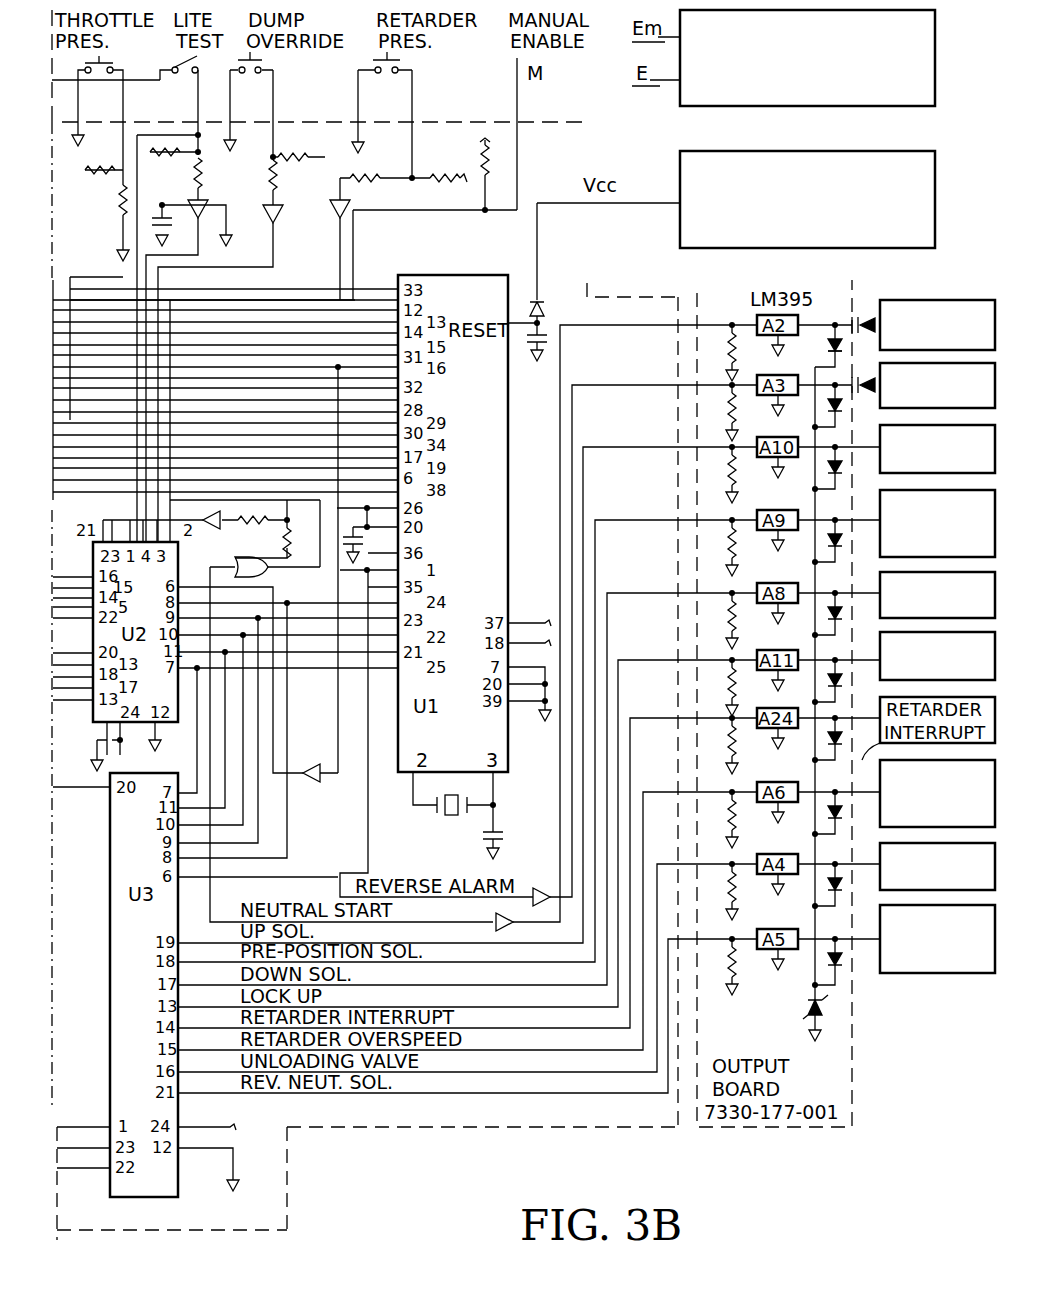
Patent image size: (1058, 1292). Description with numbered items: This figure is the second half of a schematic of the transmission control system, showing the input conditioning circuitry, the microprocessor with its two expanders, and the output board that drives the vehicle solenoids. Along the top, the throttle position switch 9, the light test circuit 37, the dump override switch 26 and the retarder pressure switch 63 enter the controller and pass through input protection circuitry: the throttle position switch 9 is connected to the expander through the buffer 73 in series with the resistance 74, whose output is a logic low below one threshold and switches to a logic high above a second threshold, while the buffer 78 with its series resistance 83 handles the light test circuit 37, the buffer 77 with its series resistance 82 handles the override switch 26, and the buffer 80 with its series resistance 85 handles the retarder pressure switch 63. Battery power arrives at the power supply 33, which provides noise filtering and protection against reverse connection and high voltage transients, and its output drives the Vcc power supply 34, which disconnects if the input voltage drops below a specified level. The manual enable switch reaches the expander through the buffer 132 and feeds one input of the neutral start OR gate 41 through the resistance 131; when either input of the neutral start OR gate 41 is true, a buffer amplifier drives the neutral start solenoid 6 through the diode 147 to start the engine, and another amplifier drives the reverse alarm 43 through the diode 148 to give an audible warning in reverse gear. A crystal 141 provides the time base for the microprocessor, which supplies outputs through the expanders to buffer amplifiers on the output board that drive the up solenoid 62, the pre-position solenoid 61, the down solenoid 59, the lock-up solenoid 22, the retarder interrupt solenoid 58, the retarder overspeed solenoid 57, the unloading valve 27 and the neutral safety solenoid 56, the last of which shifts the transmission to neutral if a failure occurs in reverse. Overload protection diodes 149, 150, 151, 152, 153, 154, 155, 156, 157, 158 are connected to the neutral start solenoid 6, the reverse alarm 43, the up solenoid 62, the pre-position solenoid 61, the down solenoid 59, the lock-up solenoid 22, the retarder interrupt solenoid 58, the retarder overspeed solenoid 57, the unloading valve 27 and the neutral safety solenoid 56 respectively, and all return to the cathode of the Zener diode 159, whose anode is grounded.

The throttle position switch 9 is at (113, 67).
The light test circuit 37 is at (186, 82).
The dump override switch 26 is at (268, 72).
The retarder pressure switch 63 is at (415, 73).
The resistance 74 is at (121, 207).
The buffer 73 is at (117, 258).
The series resistance 83 is at (188, 178).
The buffer 78 is at (204, 206).
The series resistance 82 is at (282, 182).
The buffer 77 is at (284, 223).
The buffer 80 is at (332, 227).
The series resistance 85 is at (362, 174).
The power supply 33 is at (855, 100).
The Vcc power supply 34 is at (899, 216).
The buffer 132 is at (203, 526).
The neutral start OR gate 41 is at (251, 537).
The resistance 131 is at (283, 566).
The crystal 141 is at (455, 819).
The diode 149 is at (832, 336).
The diode 147 is at (862, 324).
The diode 148 is at (828, 356).
The diode 150 is at (825, 408).
The diode 151 is at (825, 470).
The diode 152 is at (825, 544).
The diode 153 is at (825, 614).
The diode 154 is at (842, 682).
The diode 155 is at (825, 739).
The diode 156 is at (825, 814).
The diode 157 is at (825, 886).
The diode 158 is at (846, 965).
The Zener diode 159 is at (824, 1006).
The neutral start solenoid 6 is at (971, 349).
The reverse alarm 43 is at (983, 409).
The up solenoid 62 is at (983, 451).
The pre-position solenoid 61 is at (978, 557).
The down solenoid 59 is at (880, 576).
The lock-up solenoid 22 is at (983, 679).
The retarder interrupt solenoid 58 is at (862, 762).
The retarder overspeed solenoid 57 is at (983, 807).
The unloading valve 27 is at (983, 890).
The neutral safety solenoid 56 is at (983, 965).